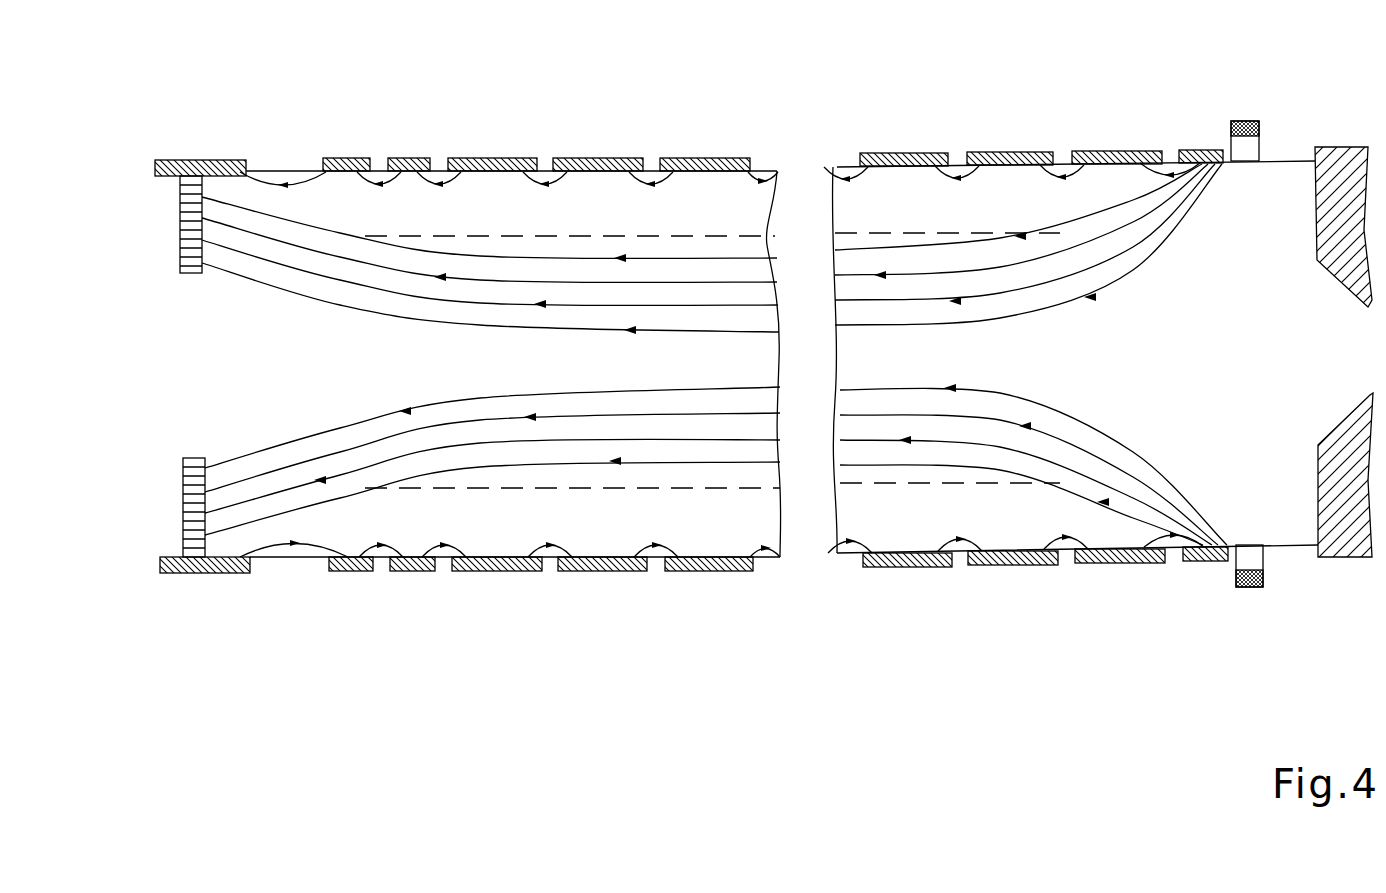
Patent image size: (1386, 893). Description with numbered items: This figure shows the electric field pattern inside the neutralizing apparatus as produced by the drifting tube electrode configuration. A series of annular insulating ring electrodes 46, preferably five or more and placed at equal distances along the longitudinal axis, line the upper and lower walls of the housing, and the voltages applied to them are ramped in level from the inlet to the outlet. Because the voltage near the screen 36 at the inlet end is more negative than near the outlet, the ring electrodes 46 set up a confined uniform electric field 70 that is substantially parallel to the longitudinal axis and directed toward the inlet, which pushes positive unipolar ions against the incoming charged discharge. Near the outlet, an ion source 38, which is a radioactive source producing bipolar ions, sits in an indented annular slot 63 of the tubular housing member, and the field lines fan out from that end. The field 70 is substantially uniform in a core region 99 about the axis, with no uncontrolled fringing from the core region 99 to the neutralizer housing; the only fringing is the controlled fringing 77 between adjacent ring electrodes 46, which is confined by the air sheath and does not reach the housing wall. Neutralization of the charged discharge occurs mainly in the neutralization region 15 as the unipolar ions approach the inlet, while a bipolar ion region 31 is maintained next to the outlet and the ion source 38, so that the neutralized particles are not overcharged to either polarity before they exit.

The neutralization region 15 is at (318, 392).
The bipolar ion region 31 is at (1241, 298).
The screen 36 is at (180, 232).
The ion source 38 is at (1252, 590).
The annular insulating ring electrodes 46 is at (470, 157).
The indented annular slot 63 is at (1256, 562).
The confined uniform electric field 70 is at (711, 296).
The controlled fringing 77 is at (963, 566).
The core region 99 is at (910, 290).